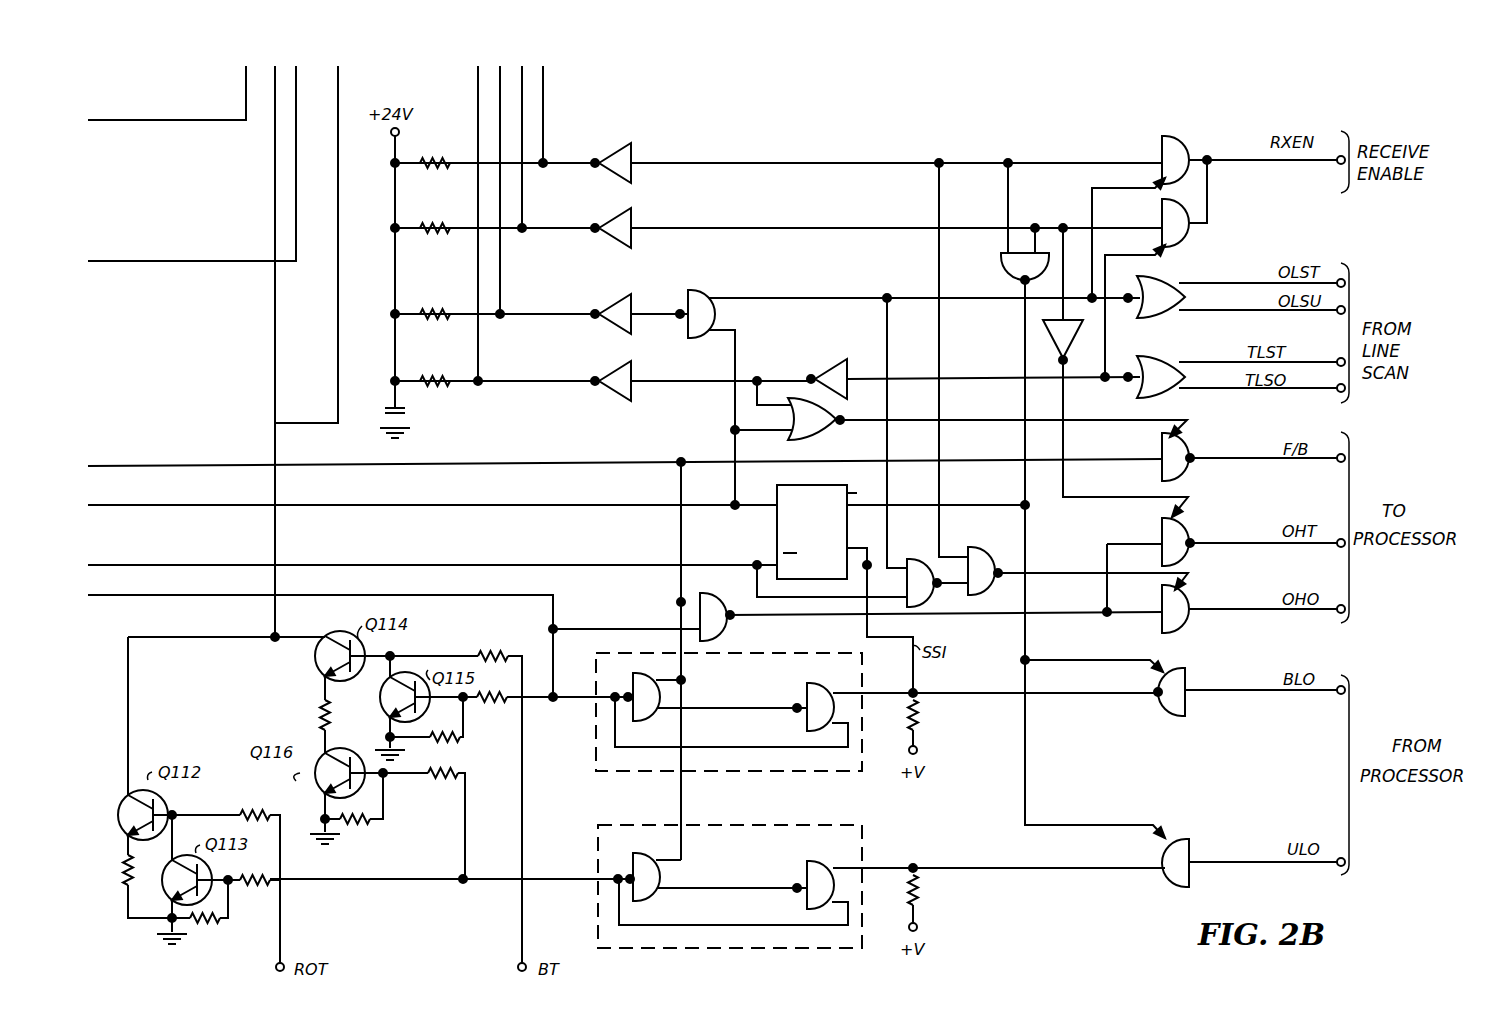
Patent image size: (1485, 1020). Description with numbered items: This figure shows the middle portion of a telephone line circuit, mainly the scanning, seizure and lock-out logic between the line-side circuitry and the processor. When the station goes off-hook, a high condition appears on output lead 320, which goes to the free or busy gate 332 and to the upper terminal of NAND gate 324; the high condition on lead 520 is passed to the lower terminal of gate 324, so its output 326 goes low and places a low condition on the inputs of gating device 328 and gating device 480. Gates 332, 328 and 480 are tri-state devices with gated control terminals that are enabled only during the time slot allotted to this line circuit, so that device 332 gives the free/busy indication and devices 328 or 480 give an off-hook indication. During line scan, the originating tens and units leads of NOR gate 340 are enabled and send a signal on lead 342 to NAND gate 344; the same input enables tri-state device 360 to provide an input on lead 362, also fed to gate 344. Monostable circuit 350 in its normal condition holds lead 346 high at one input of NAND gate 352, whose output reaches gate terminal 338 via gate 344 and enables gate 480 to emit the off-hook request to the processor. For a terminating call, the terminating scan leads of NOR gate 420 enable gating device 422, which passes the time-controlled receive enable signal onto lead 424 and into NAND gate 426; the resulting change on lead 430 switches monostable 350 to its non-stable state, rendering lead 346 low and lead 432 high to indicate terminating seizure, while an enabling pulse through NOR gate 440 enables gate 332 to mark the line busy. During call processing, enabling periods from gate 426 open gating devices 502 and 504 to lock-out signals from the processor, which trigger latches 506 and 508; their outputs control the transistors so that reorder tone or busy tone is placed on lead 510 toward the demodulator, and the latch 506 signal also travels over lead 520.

The output lead 320 is at (171, 470).
The NAND gate 324 is at (674, 597).
The output lead 326 is at (807, 619).
The gating device 328 is at (1162, 526).
The free or busy gate 332 is at (1161, 445).
The gate terminal 338 is at (1256, 578).
The NOR gate 340 is at (1164, 318).
The lead 342 is at (886, 328).
The NAND gate 344 is at (710, 289).
The lead 346 is at (171, 567).
The monostable circuit 350 is at (778, 531).
The NAND gate 352 is at (939, 555).
The tri-state device 360 is at (1156, 146).
The lead 362 is at (838, 164).
The NOR gate 420 is at (1152, 386).
The gating device 422 is at (1164, 213).
The lead 424 is at (838, 224).
The NAND gate 426 is at (1007, 270).
The lead 430 is at (1009, 504).
The lead 432 is at (171, 510).
The NOR gate 440 is at (830, 430).
The gating device 480 is at (1167, 632).
The gating device 502 is at (1165, 714).
The gating device 504 is at (1172, 884).
The latch 506 is at (768, 774).
The latch 508 is at (763, 949).
The lead 510 is at (227, 638).
The lead 520 is at (171, 597).